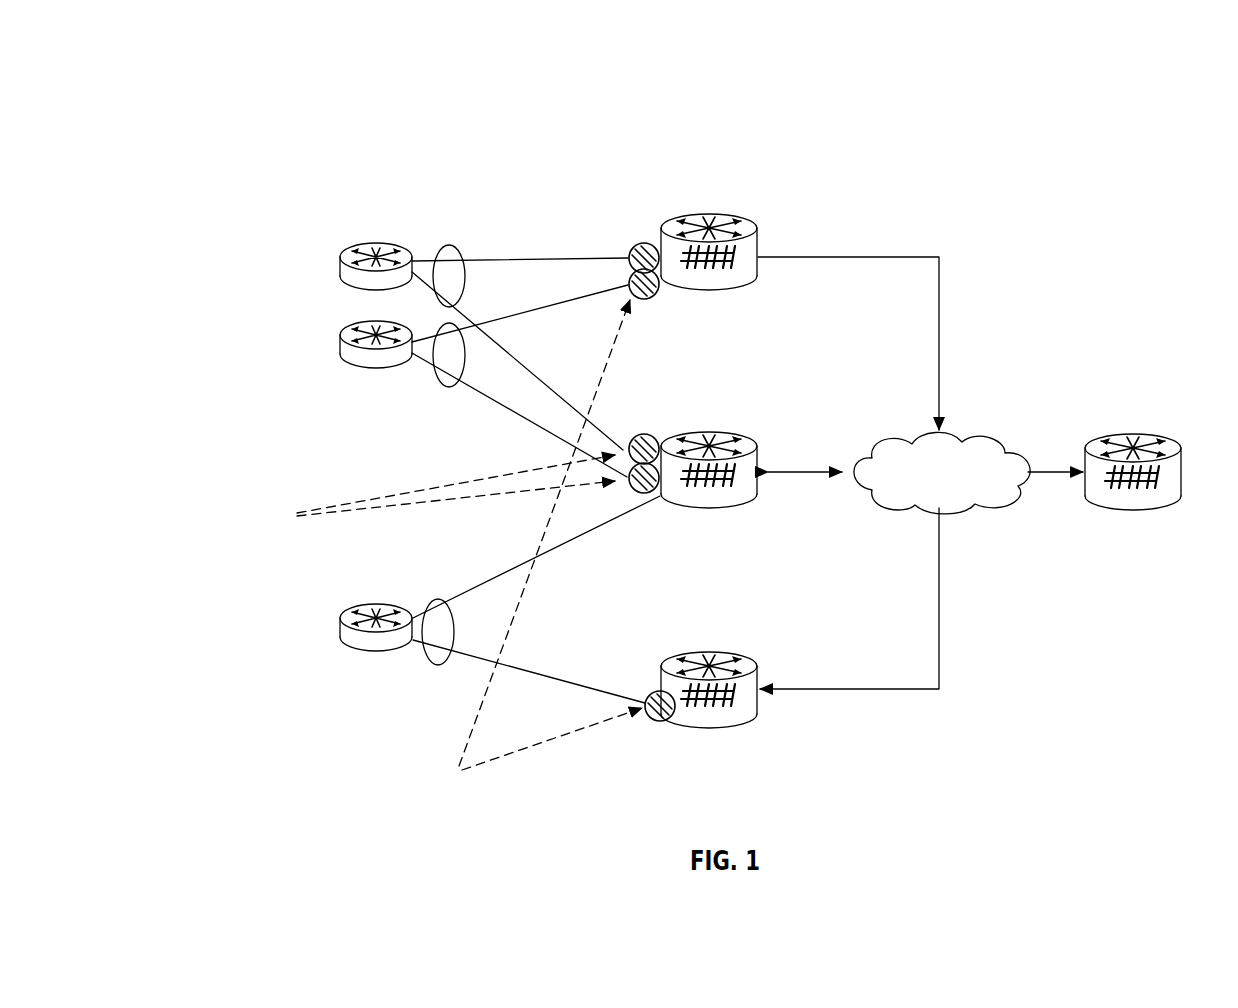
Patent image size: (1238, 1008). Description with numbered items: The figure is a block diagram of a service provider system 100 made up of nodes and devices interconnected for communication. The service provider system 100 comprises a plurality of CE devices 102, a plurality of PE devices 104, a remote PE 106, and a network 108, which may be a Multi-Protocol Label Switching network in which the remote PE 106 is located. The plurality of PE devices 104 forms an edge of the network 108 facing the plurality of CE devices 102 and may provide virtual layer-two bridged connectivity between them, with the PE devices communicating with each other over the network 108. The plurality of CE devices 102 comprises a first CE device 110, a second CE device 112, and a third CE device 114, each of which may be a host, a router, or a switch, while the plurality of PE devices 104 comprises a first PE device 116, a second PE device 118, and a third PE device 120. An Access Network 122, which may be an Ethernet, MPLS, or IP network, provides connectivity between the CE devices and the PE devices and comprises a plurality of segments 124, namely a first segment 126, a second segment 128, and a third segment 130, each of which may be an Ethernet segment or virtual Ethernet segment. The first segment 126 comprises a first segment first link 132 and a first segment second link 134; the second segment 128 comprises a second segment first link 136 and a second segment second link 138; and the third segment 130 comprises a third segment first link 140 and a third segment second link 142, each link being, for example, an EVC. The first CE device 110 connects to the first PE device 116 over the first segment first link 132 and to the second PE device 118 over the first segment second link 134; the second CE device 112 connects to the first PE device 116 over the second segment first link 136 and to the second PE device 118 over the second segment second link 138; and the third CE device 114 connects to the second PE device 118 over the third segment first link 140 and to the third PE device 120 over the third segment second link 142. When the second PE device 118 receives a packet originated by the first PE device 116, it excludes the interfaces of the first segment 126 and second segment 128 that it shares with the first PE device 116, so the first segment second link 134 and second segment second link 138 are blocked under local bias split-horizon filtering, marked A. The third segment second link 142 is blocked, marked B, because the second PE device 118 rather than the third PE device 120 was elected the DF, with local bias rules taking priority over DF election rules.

The service provider system 100 is at (228, 115).
The plurality of CE devices 102 is at (367, 160).
The plurality of PE devices 104 is at (724, 165).
The remote PE 106 is at (1133, 512).
The network 108 is at (971, 440).
The first CE device 110 is at (340, 268).
The second CE device 112 is at (340, 345).
The third CE device 114 is at (340, 628).
The first PE device 116 is at (749, 227).
The second PE device 118 is at (760, 485).
The third PE device 120 is at (760, 703).
The Access Network 122 is at (452, 158).
The plurality of segments 124 is at (428, 190).
The first segment 126 is at (455, 246).
The second segment 128 is at (454, 388).
The third segment 130 is at (440, 600).
The first segment first link 132 is at (566, 257).
The first segment second link 134 is at (562, 398).
The second segment first link 136 is at (500, 318).
The second segment second link 138 is at (504, 404).
The third segment first link 140 is at (572, 541).
The third segment second link 142 is at (524, 671).